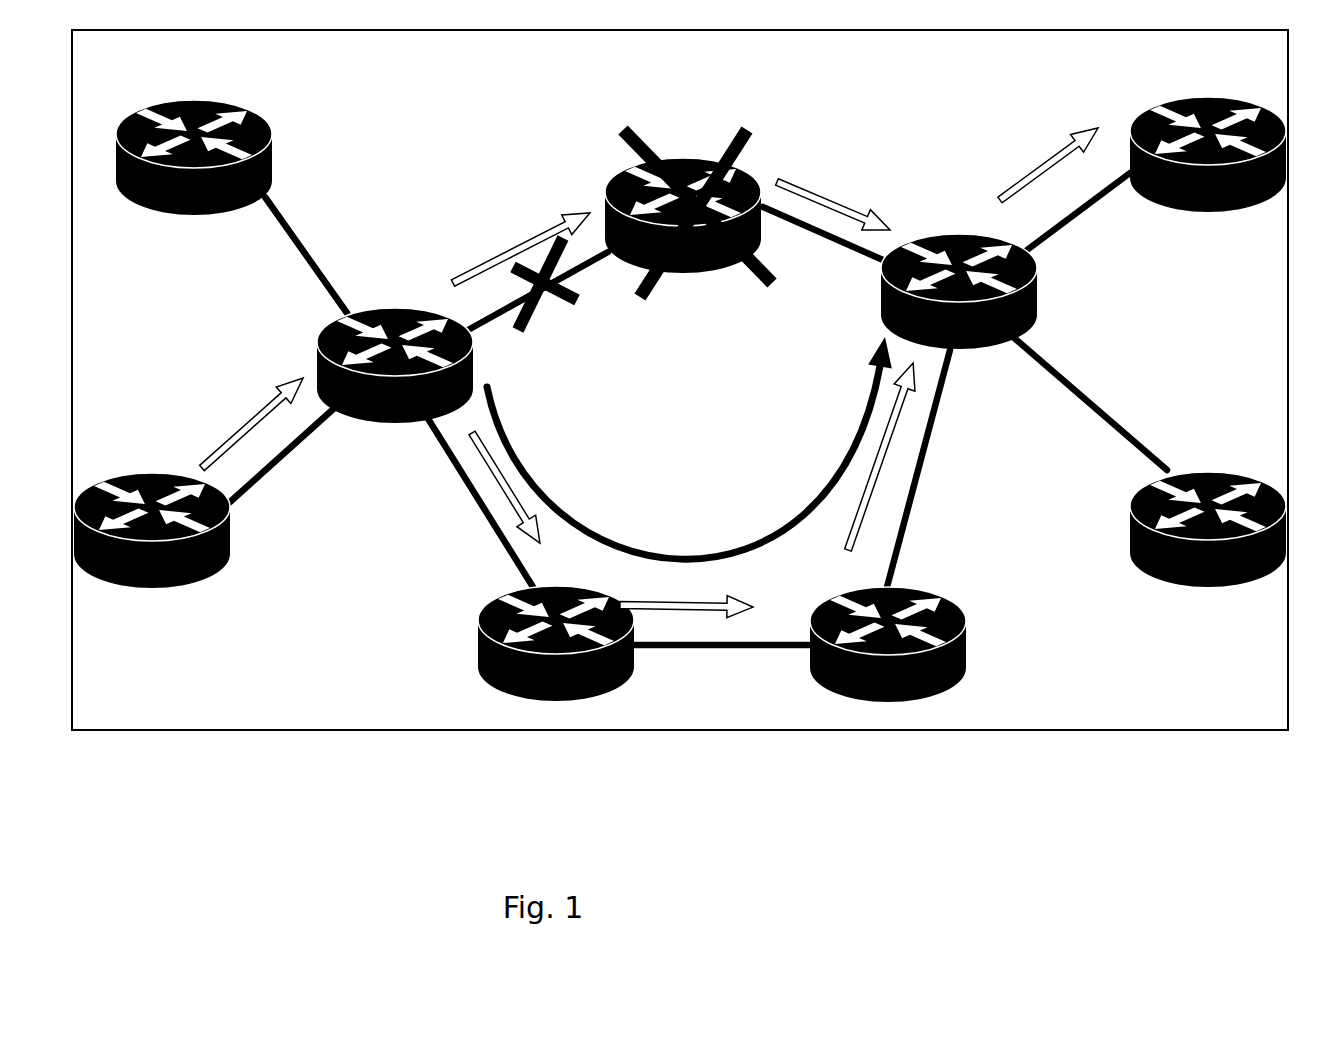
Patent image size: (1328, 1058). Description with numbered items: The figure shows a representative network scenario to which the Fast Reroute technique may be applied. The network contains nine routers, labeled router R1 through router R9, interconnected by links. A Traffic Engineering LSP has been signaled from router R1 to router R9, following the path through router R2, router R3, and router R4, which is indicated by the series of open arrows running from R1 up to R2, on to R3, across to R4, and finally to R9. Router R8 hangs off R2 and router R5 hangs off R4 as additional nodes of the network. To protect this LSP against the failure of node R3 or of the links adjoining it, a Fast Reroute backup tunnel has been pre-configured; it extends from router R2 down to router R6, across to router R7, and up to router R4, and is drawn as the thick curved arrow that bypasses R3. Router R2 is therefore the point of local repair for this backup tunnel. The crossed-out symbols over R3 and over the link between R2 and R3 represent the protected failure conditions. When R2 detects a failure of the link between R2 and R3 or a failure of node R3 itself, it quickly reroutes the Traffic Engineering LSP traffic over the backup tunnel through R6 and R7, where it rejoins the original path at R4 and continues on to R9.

The router R1 is at (152, 502).
The router R2 is at (395, 335).
The router R3 is at (688, 198).
The router R4 is at (959, 262).
The router R5 is at (1208, 493).
The router R6 is at (528, 643).
The router R7 is at (916, 644).
The router R8 is at (194, 130).
The router R9 is at (1208, 126).